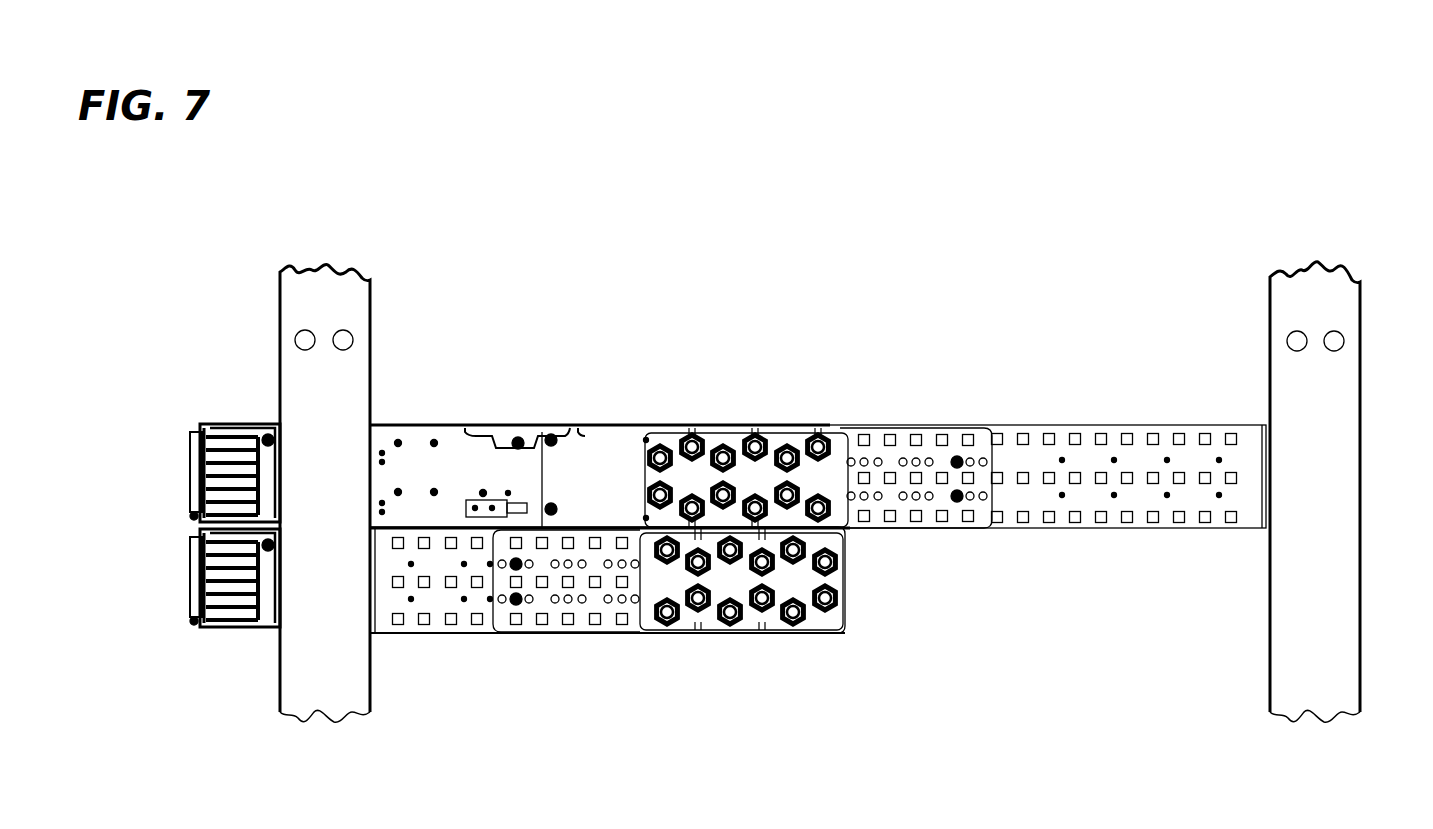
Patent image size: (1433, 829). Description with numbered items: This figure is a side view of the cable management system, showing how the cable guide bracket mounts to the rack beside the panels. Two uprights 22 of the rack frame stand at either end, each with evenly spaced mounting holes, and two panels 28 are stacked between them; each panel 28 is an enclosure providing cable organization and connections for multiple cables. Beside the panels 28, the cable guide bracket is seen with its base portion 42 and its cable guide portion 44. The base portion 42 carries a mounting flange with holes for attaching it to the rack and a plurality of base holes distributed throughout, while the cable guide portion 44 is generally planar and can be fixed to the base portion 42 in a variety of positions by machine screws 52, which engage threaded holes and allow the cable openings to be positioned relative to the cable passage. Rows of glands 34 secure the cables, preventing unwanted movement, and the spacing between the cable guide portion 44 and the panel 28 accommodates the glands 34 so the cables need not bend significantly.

The upright 22 is at (342, 385).
The panel 28 is at (483, 428).
The gland 34 is at (800, 432).
The base portion 42 is at (1138, 517).
The cable guide portion 44 is at (903, 440).
The machine screw 52 is at (955, 500).